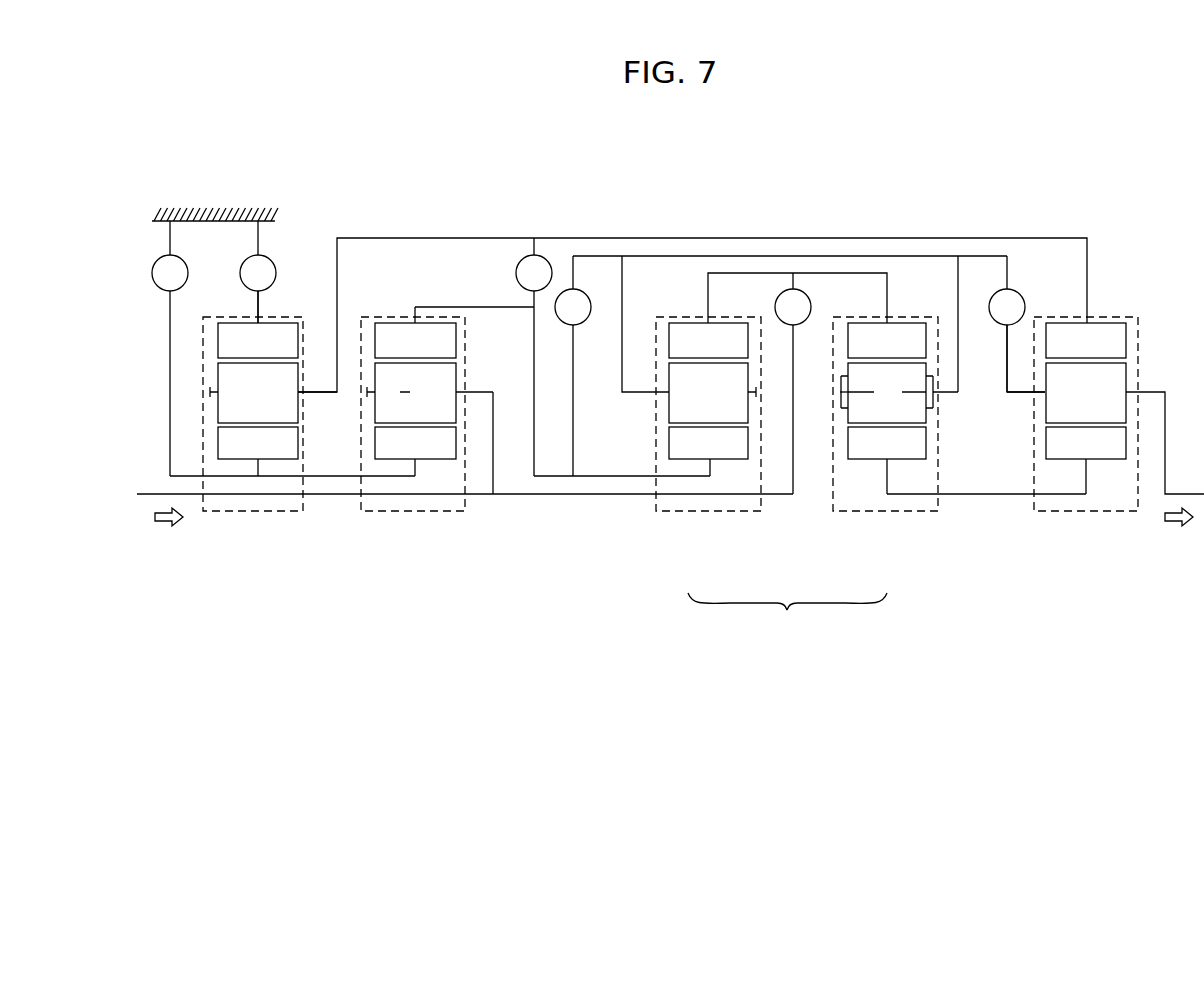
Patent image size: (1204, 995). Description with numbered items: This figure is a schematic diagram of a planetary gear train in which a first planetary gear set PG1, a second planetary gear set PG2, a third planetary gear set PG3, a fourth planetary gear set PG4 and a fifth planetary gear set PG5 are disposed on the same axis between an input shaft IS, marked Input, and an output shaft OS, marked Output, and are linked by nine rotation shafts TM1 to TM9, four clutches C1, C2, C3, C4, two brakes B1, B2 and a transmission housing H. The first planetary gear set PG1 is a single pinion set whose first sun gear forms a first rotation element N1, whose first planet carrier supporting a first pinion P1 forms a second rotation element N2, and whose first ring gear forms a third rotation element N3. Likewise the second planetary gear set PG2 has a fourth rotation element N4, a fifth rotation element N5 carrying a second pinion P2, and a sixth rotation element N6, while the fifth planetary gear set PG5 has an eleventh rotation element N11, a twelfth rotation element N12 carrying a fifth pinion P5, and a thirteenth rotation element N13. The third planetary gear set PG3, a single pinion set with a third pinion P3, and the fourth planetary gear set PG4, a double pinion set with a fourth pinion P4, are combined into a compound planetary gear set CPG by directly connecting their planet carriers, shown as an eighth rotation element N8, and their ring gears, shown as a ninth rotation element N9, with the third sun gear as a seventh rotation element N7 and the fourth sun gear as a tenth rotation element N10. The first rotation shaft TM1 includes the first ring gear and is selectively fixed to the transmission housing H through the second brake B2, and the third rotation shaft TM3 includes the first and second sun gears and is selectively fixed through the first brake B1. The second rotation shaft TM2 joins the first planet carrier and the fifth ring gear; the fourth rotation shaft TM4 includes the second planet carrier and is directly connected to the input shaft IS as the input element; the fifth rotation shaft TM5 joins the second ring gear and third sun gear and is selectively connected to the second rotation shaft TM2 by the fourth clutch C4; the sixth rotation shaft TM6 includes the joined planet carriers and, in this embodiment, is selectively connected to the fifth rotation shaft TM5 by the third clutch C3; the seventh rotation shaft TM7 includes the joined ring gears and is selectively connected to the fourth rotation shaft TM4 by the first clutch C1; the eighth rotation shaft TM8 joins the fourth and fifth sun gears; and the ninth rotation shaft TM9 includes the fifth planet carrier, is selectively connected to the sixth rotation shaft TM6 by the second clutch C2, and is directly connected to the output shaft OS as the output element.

The transmission housing H is at (223, 210).
The first brake B1 is at (170, 348).
The second brake B2 is at (258, 272).
The first clutch C1 is at (793, 383).
The second clutch C2 is at (1017, 324).
The third clutch C3 is at (573, 366).
The fourth clutch C4 is at (483, 357).
The first rotation shaft TM1 is at (259, 302).
The second rotation shaft TM2 is at (561, 236).
The third rotation shaft TM3 is at (342, 481).
The fourth rotation shaft TM4 is at (490, 446).
The fifth rotation shaft TM5 is at (612, 479).
The sixth rotation shaft TM6 is at (767, 254).
The seventh rotation shaft TM7 is at (855, 271).
The eighth rotation shaft TM8 is at (988, 498).
The ninth rotation shaft TM9 is at (1010, 351).
The first planetary gear set PG1 is at (253, 515).
The second planetary gear set PG2 is at (410, 515).
The third planetary gear set PG3 is at (707, 515).
The fourth planetary gear set PG4 is at (887, 515).
The fifth planetary gear set PG5 is at (1082, 515).
The first pinion P1 is at (254, 393).
The second pinion P2 is at (411, 393).
The third pinion P3 is at (712, 393).
The fourth pinion P4 is at (899, 393).
The fifth pinion P5 is at (1086, 393).
The first rotation element N1 is at (258, 451).
The second rotation element N2 is at (320, 396).
The third rotation element N3 is at (258, 340).
The fourth rotation element N4 is at (415, 451).
The fifth rotation element N5 is at (487, 390).
The sixth rotation element N6 is at (415, 332).
The seventh rotation element N7 is at (708, 451).
The eighth rotation element N8 is at (645, 398).
The ninth rotation element N9 is at (797, 340).
The tenth rotation element N10 is at (887, 460).
The eleventh rotation element N11 is at (1086, 460).
The twelfth rotation element N12 is at (1023, 396).
The thirteenth rotation element N13 is at (1086, 340).
The input shaft IS is at (320, 497).
The output shaft OS is at (1176, 492).
The compound planetary gear set CPG is at (787, 617).
The input Input is at (170, 532).
The output Output is at (1178, 532).